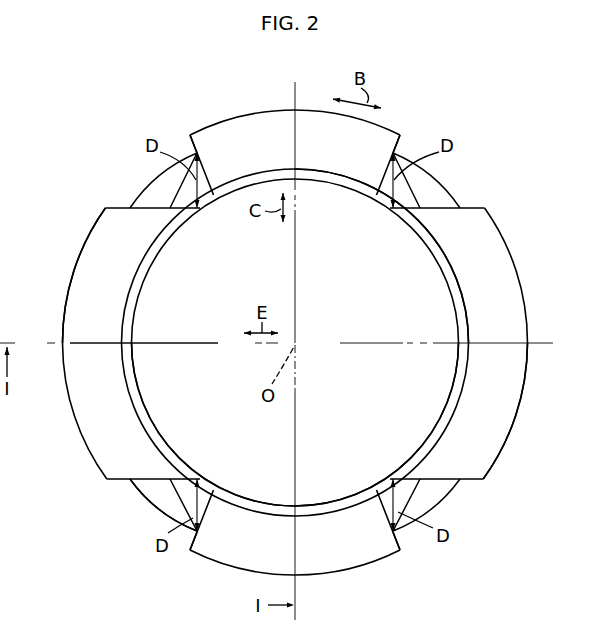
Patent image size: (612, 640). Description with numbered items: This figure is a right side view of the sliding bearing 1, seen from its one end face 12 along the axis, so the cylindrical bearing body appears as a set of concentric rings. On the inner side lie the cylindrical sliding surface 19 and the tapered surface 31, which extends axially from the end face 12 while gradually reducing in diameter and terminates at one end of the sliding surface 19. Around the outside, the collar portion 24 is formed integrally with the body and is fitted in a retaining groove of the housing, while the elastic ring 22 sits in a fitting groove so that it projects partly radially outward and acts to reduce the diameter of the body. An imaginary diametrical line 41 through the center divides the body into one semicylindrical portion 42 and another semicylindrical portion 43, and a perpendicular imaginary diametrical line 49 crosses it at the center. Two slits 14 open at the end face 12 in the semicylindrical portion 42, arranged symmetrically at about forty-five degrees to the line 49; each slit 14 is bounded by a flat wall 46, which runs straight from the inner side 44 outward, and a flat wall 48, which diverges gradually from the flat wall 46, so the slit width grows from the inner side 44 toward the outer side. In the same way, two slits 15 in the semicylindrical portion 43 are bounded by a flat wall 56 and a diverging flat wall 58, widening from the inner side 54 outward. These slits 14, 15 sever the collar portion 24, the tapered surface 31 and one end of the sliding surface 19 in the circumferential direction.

The sliding bearing 1 is at (261, 107).
The one end face 12 is at (490, 300).
The slits 14 is at (166, 187).
The slits 15 is at (424, 185).
The sliding surface 19 is at (424, 243).
The elastic ring 22 is at (162, 495).
The collar portion 24 is at (100, 250).
The tapered surface 31 is at (165, 248).
The imaginary diametrical line 41 is at (296, 556).
The semicylindrical portion 42 is at (113, 417).
The semicylindrical portion 43 is at (490, 373).
The inner side 44 is at (137, 377).
The flat wall 46 is at (142, 207).
The flat wall 48 is at (191, 138).
The perpendicular imaginary diametrical line 49 is at (97, 343).
The inner side 54 is at (457, 365).
The flat wall 56 is at (448, 207).
The flat wall 58 is at (401, 137).